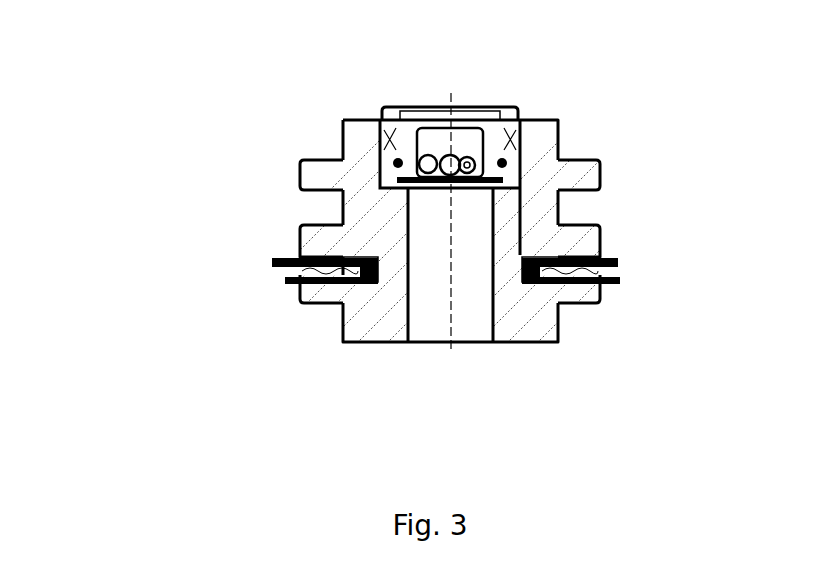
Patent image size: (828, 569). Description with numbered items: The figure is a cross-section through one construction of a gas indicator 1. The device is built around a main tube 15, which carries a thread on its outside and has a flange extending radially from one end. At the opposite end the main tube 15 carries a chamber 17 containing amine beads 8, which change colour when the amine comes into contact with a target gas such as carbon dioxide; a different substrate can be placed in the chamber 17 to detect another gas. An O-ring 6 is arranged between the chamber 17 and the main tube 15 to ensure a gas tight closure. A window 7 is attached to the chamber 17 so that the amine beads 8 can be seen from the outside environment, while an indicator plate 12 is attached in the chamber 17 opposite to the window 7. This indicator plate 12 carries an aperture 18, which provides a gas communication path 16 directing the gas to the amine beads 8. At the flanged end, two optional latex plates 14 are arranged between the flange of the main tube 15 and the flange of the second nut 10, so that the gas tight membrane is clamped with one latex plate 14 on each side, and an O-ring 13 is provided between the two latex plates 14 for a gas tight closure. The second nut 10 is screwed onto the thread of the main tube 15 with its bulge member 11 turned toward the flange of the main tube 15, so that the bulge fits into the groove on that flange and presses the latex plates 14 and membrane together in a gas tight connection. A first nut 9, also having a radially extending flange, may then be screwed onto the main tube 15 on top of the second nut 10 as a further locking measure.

The gas indicator 1 is at (220, 92).
The O-ring 6 is at (388, 155).
The window 7 is at (408, 105).
The amine beads 8 is at (460, 128).
The first nut 9 is at (604, 157).
The second nut 10 is at (604, 226).
The bulge member 11 is at (618, 266).
The indicator plate 12 is at (390, 163).
The O-ring 13 is at (335, 257).
The latex plates 14 is at (277, 265).
The main tube 15 is at (335, 333).
The gas communication path 16 is at (440, 345).
The chamber 17 is at (474, 138).
The aperture 18 is at (452, 193).